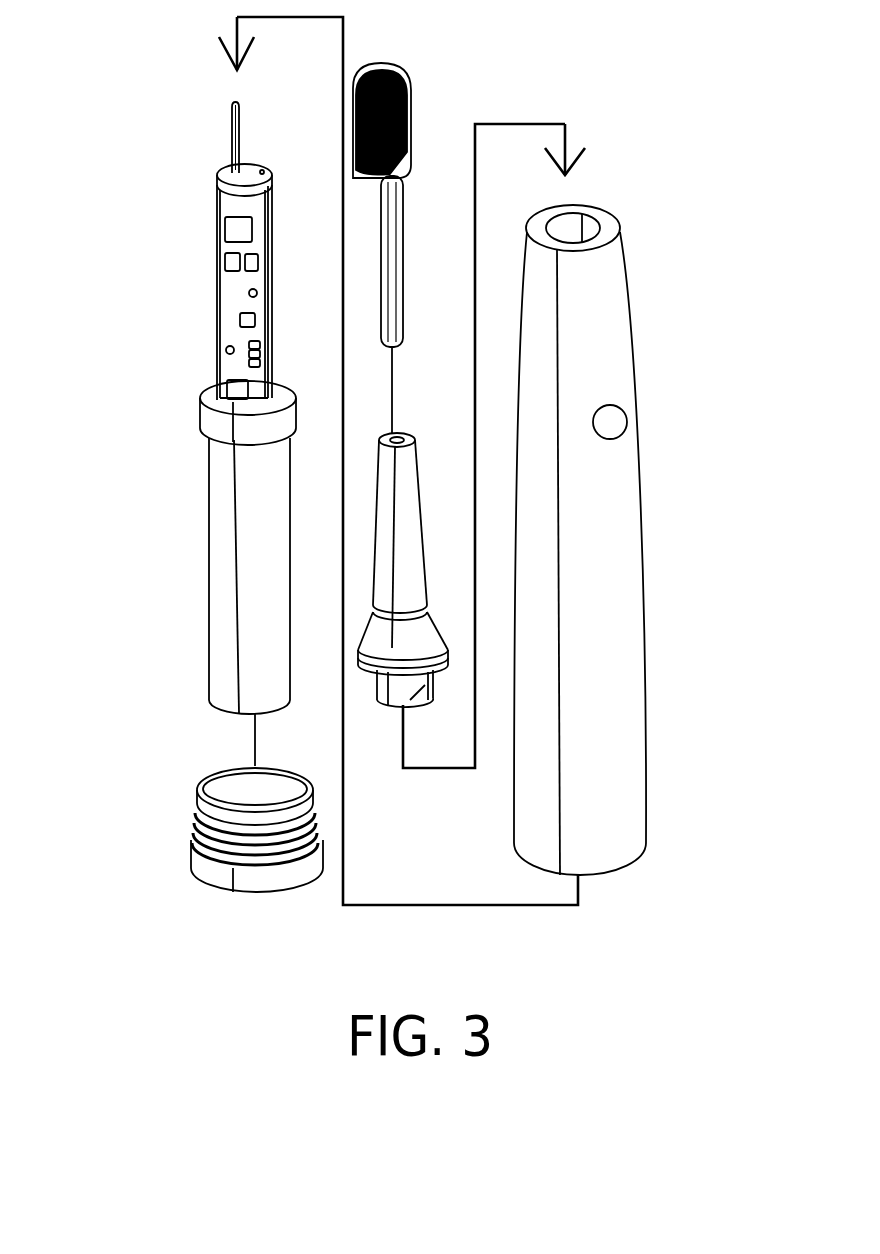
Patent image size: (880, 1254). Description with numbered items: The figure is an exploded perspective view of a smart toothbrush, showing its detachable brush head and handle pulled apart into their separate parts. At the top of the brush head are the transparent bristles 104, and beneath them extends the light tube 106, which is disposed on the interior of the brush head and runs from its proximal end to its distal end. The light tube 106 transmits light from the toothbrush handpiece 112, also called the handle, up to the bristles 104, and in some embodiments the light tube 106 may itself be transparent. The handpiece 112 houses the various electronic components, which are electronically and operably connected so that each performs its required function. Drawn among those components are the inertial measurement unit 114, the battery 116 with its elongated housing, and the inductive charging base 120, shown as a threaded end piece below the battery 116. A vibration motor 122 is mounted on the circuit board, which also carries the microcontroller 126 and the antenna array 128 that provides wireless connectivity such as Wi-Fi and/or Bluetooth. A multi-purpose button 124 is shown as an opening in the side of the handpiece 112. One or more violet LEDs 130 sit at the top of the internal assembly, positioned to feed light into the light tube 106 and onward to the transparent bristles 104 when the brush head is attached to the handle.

The transparent bristles 104 is at (407, 95).
The light tube 106 is at (400, 267).
The toothbrush handpiece 112 is at (603, 545).
The inertial measurement unit 114 is at (227, 262).
The battery 116 is at (222, 560).
The inductive charging base 120 is at (196, 860).
The vibration motor 122 is at (232, 230).
The multi-purpose button 124 is at (622, 420).
The microcontroller 126 is at (243, 322).
The antenna array 128 is at (248, 366).
The violet LEDs 130 is at (228, 168).